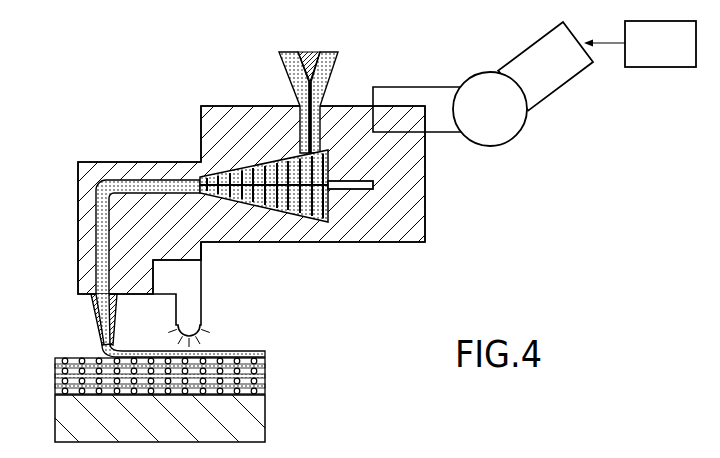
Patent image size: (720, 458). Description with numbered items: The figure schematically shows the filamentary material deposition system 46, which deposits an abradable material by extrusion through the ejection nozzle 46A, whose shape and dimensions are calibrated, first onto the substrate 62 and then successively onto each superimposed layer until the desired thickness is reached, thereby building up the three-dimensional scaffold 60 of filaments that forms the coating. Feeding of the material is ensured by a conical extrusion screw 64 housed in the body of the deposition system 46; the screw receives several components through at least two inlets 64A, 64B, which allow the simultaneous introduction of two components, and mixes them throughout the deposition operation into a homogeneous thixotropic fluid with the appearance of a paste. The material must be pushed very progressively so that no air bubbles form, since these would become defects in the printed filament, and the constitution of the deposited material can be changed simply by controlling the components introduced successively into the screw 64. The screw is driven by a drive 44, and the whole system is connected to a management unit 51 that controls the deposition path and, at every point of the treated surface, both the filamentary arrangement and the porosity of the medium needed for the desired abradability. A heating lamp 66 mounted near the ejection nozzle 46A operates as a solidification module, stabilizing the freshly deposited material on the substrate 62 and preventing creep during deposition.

The drive motor 44 is at (490, 108).
The filamentary material deposition system 46 is at (452, 212).
The ejection nozzle 46A is at (93, 318).
The management unit 51 is at (648, 52).
The three-dimensional scaffold 60 is at (273, 363).
The substrate 62 is at (70, 413).
The conical extrusion screw 64 is at (277, 158).
The inlet 64A is at (333, 73).
The inlet 64B is at (290, 70).
The heating lamp 66 is at (203, 332).